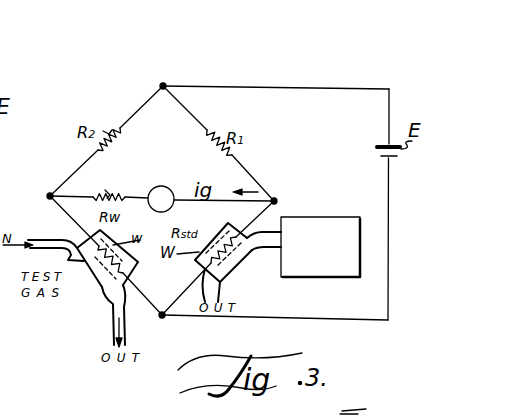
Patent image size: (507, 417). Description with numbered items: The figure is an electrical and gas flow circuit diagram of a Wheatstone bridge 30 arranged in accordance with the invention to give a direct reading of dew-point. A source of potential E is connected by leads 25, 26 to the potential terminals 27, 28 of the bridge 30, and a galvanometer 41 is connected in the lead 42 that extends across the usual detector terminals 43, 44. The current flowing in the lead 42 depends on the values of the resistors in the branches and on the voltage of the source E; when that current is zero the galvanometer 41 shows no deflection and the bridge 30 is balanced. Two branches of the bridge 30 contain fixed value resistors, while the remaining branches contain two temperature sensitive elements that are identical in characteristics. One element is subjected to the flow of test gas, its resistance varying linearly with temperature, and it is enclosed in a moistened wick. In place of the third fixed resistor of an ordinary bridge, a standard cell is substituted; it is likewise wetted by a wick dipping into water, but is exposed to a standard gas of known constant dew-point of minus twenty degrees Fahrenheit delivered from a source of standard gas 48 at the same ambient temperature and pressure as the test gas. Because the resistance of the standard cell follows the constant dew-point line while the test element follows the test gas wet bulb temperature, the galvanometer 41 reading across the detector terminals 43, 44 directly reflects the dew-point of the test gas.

The lead 25 is at (348, 79).
The lead 26 is at (343, 321).
The potential terminal 27 is at (176, 80).
The potential terminal 28 is at (161, 317).
The Wheatstone bridge 30 is at (180, 146).
The galvanometer 41 is at (172, 188).
The lead 42 is at (131, 197).
The detector terminal 43 is at (50, 195).
The detector terminal 44 is at (277, 200).
The source of standard gas 48 is at (335, 217).